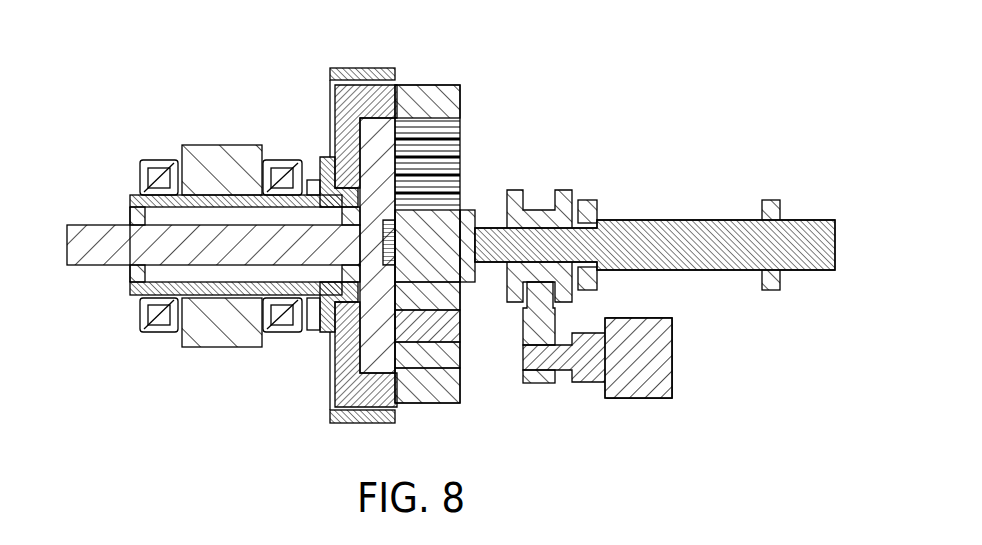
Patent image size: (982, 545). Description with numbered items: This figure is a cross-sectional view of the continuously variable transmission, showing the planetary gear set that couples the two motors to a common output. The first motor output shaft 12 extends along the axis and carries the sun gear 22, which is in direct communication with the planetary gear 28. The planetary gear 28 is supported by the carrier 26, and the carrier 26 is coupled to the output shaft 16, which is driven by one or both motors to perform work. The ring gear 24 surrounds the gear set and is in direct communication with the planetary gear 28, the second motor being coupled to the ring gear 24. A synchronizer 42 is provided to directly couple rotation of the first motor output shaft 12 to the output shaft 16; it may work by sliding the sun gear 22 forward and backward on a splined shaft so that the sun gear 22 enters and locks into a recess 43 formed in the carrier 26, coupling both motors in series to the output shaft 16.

The first motor output shaft 12 is at (787, 240).
The output shaft 16 is at (100, 252).
The sun gear 22 is at (462, 222).
The ring gear 24 is at (438, 98).
The carrier 26 is at (376, 120).
The planetary gear 28 is at (457, 352).
The synchronizer 42 is at (522, 212).
The recess 43 is at (352, 300).